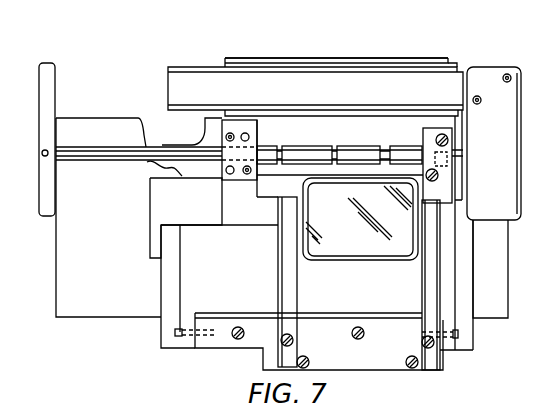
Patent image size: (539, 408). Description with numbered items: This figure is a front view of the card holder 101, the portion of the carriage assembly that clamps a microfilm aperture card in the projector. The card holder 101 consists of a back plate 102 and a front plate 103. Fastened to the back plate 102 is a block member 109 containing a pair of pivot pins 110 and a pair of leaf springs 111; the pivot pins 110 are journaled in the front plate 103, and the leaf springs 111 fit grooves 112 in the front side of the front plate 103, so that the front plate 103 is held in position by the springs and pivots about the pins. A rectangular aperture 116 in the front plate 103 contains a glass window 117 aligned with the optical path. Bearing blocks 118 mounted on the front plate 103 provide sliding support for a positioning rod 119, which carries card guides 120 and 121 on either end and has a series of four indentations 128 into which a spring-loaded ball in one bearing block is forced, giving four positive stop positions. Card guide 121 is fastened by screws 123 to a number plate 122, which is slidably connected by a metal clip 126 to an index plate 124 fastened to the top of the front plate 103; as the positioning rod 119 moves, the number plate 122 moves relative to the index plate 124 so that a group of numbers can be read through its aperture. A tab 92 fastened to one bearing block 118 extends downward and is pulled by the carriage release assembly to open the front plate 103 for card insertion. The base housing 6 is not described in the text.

The base housing 6 is at (57, 317).
The tab 92 is at (447, 192).
The card holder 101 is at (167, 193).
The back plate 102 is at (160, 268).
The front plate 103 is at (222, 203).
The block member 109 is at (365, 375).
The pivot pins 110 is at (175, 333).
The leaf springs 111 is at (333, 299).
The grooves 112 is at (278, 200).
The rectangular aperture 116 is at (372, 258).
The glass window 117 is at (345, 258).
The bearing blocks 118 is at (259, 124).
The positioning rod 119 is at (78, 147).
The card guide 120 is at (55, 66).
The card guide 121 is at (496, 220).
The number plate 122 is at (173, 66).
The screws 123 is at (506, 83).
The index plate 124 is at (400, 58).
The metal clip 126 is at (248, 60).
The indentations 128 is at (332, 146).